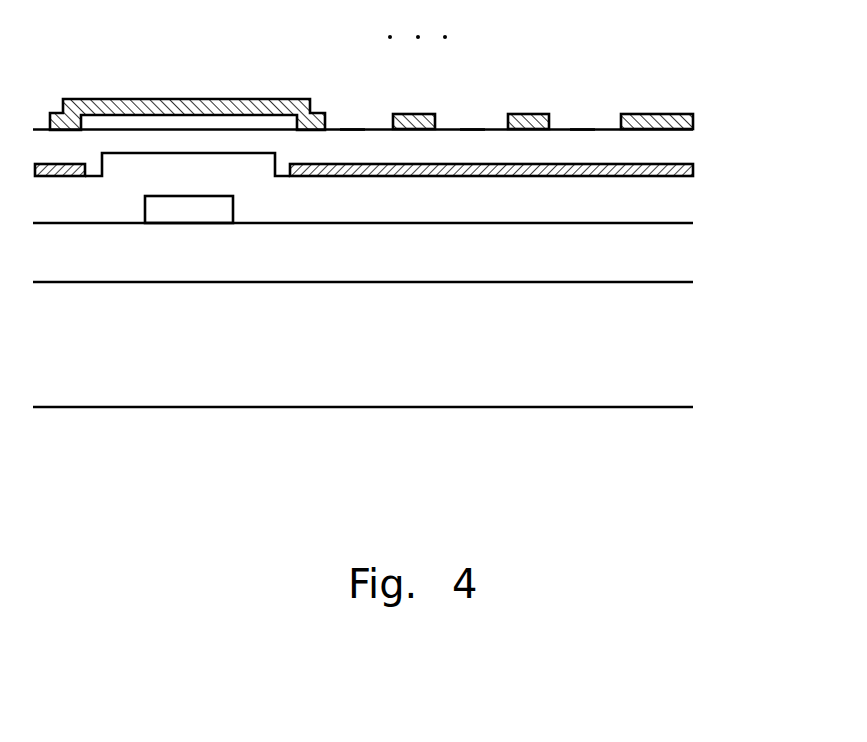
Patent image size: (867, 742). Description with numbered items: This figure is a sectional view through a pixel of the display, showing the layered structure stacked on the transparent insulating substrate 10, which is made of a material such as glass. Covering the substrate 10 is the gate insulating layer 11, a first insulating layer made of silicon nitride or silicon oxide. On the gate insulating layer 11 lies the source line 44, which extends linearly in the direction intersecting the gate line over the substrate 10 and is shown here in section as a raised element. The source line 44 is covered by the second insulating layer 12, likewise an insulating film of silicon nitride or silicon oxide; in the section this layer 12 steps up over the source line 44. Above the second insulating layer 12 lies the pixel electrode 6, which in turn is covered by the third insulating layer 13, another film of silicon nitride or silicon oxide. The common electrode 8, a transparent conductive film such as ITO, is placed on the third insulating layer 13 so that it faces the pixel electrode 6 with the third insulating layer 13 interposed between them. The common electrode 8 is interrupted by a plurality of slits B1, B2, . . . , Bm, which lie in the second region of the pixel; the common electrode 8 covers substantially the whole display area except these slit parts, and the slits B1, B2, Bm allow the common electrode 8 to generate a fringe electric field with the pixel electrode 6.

The common electrode 8 is at (128, 103).
The source line 44 is at (193, 207).
The third insulating layer 13 is at (680, 145).
The pixel electrode 6 is at (688, 170).
The second insulating layer 12 is at (680, 203).
The gate insulating layer 11 is at (680, 254).
The transparent insulating substrate 10 is at (680, 352).
The slit Bm is at (352, 122).
The slit B2 is at (471, 122).
The slit B1 is at (581, 122).